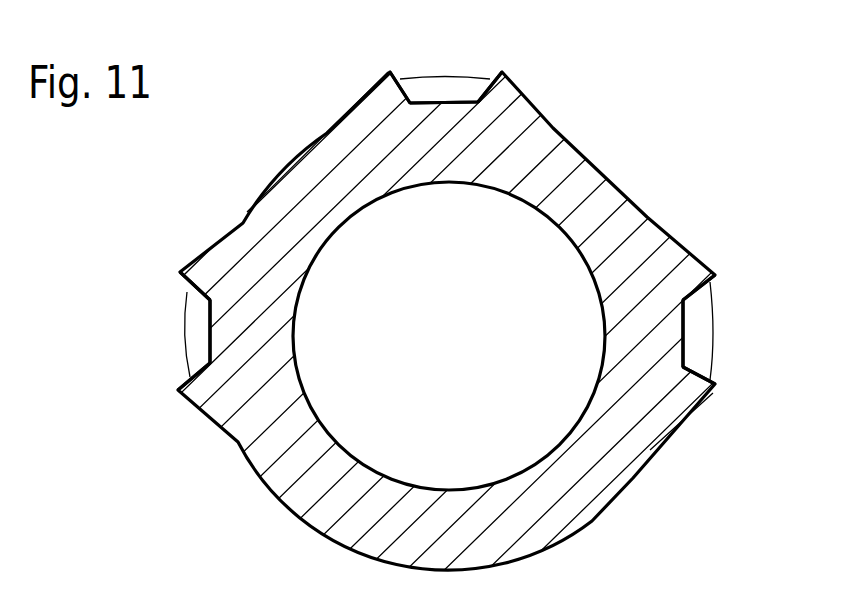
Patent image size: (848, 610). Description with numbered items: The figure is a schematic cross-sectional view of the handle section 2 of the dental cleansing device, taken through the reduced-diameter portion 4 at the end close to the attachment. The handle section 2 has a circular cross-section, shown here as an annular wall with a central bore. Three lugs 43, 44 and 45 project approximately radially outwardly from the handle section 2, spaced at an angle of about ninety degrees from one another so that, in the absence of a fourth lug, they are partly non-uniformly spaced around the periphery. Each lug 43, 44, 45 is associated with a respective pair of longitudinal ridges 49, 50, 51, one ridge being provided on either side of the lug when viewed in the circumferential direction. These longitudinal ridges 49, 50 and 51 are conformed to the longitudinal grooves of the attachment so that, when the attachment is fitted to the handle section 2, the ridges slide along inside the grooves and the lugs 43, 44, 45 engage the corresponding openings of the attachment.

The handle section 2 is at (424, 305).
The portion of the handle section 4 is at (563, 508).
The lug 43 is at (192, 338).
The lug 44 is at (447, 90).
The lug 45 is at (700, 340).
The longitudinal ridges 49 is at (179, 389).
The longitudinal ridges 50 is at (502, 72).
The longitudinal ridges 51 is at (716, 390).